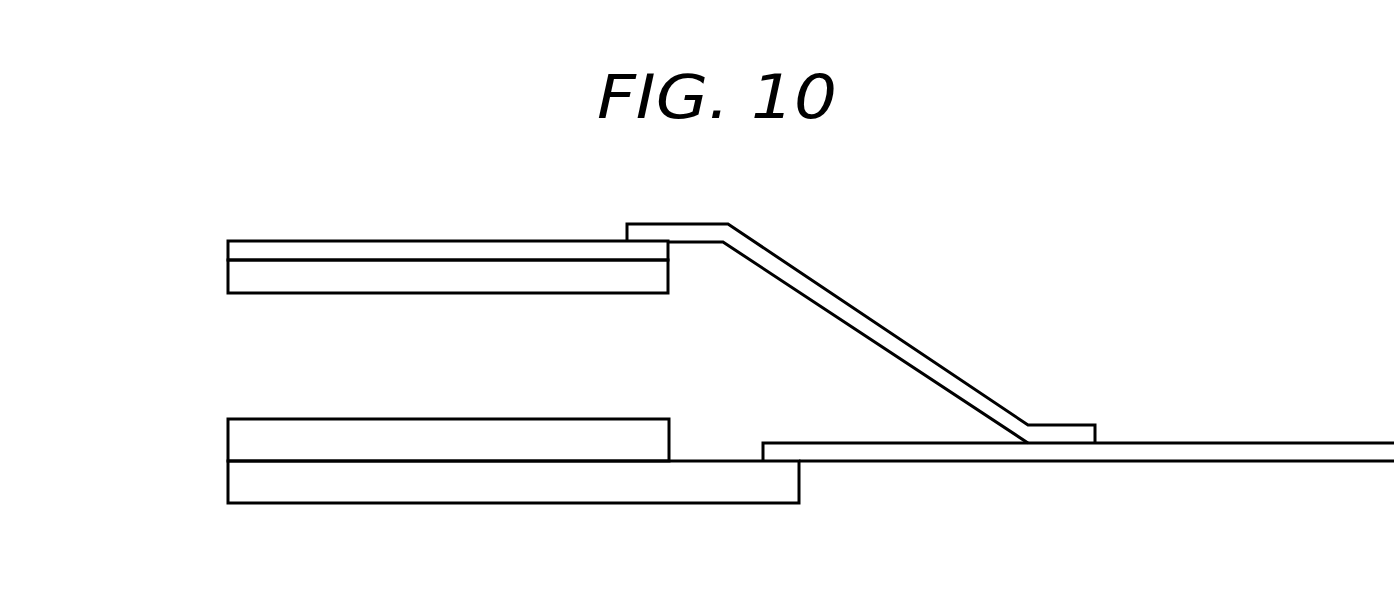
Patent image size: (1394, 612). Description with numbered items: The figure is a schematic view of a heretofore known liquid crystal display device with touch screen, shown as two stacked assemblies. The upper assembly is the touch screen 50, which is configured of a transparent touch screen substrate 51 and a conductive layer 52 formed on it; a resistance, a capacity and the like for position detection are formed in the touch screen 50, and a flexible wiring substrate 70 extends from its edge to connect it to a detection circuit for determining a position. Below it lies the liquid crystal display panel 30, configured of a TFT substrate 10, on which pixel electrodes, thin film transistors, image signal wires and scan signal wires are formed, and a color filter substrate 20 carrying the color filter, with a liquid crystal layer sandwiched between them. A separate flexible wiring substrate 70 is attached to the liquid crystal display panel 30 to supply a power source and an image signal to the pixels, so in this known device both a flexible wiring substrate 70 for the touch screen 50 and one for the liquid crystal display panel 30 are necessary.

The TFT substrate 10 is at (228, 483).
The color filter substrate 20 is at (228, 440).
The liquid crystal display panel 30 is at (135, 414).
The touch screen 50 is at (135, 223).
The touch screen substrate 51 is at (228, 250).
The conductive layer 52 is at (228, 277).
The flexible wiring substrate 70 is at (888, 331).